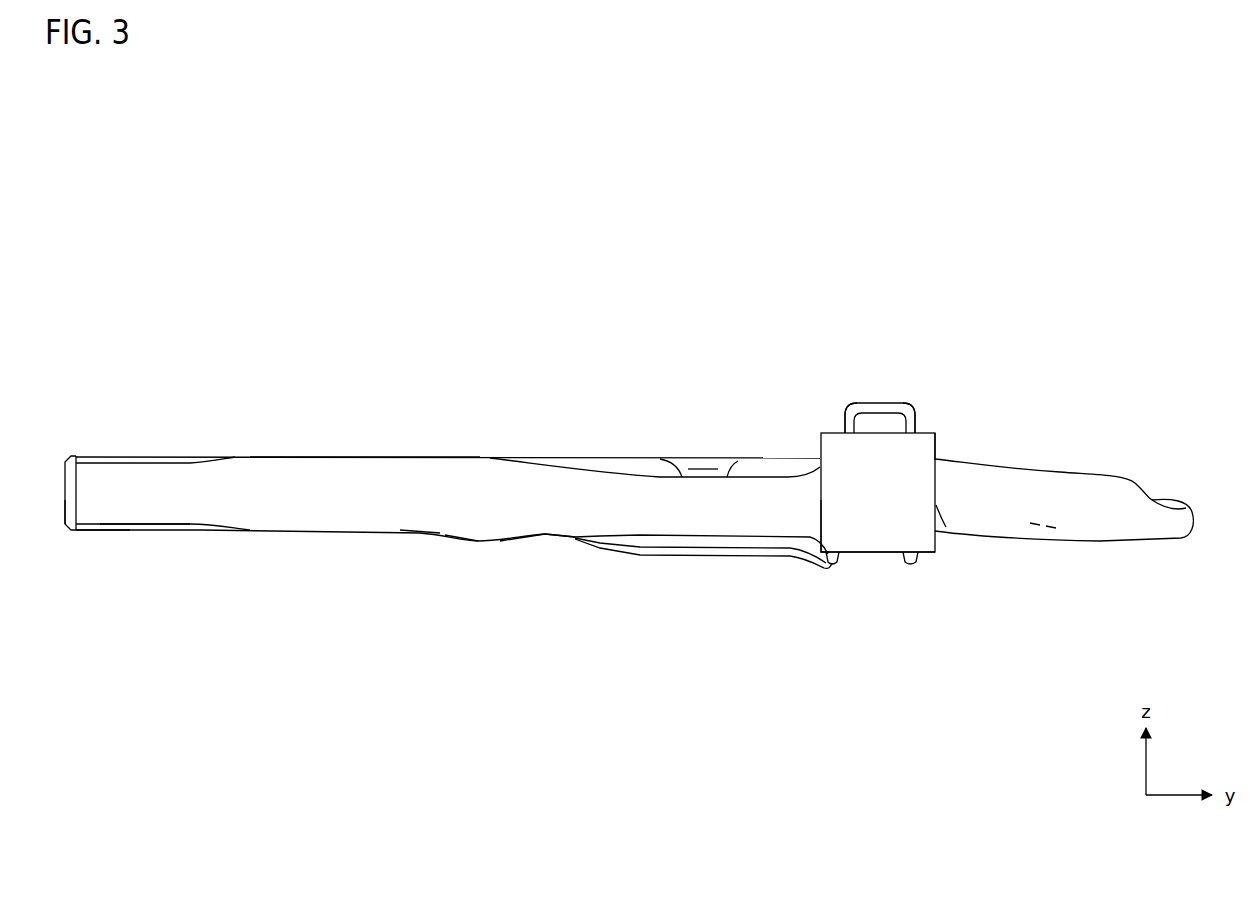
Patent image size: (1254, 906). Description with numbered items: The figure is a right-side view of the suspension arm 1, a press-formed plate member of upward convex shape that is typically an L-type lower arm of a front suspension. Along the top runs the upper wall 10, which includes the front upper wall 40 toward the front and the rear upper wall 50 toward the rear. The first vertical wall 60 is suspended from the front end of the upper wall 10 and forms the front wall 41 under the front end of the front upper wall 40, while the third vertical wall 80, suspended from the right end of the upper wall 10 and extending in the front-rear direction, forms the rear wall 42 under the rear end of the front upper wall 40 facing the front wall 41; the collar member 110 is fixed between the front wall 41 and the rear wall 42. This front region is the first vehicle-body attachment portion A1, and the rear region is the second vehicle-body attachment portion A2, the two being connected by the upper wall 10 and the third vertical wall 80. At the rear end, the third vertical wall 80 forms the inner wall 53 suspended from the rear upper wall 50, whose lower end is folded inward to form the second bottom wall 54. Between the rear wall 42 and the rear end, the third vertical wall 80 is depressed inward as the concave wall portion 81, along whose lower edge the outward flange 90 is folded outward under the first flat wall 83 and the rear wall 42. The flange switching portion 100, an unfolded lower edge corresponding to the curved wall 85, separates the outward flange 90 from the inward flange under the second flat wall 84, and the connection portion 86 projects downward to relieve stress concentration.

The suspension arm 1 is at (643, 301).
The first vehicle-body attachment portion A1 is at (946, 358).
The second vehicle-body attachment portion A2 is at (130, 428).
The upper wall 10 is at (534, 458).
The front upper wall 40 is at (885, 402).
The front wall 41 is at (916, 428).
The rear wall 42 is at (843, 428).
The rear upper wall 50 is at (196, 456).
The inner wall 53 is at (200, 514).
The second bottom wall 54 is at (128, 536).
The first vertical wall 60 is at (1084, 524).
The third vertical wall 80 is at (320, 488).
The concave wall portion 81 is at (570, 639).
The first flat wall 83 is at (630, 497).
The second flat wall 84 is at (430, 490).
The curved wall 85 is at (565, 513).
The connection portion 86 is at (465, 554).
The outward flange 90 is at (729, 545).
The flange switching portion 100 is at (536, 548).
The collar member 110 is at (873, 532).